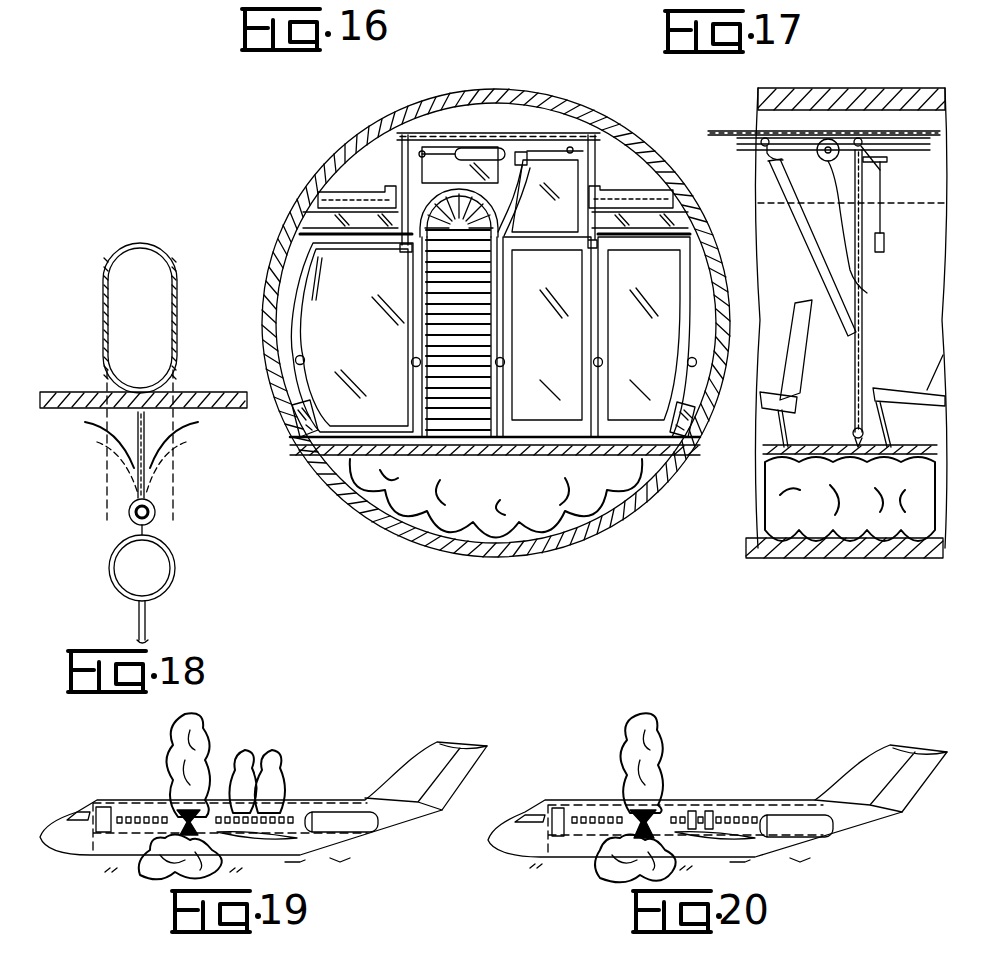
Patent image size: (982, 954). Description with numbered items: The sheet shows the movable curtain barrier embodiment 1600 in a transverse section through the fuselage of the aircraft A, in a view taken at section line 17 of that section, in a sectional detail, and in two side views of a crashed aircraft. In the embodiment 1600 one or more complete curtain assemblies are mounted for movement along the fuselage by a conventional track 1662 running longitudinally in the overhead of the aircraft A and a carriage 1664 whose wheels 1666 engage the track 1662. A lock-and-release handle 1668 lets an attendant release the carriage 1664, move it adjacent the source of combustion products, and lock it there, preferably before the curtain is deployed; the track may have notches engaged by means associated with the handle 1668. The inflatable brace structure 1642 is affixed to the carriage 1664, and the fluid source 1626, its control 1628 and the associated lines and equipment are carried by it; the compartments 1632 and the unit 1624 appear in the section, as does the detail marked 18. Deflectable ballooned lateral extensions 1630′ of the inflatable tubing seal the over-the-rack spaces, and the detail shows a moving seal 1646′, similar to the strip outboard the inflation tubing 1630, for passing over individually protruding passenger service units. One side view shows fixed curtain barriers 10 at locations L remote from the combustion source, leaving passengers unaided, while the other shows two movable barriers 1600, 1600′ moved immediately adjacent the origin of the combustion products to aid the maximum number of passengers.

In FIG. 16, the embodiment 1600 is at (312, 170).
In FIG. 20, the embodiment 1600 is at (613, 820).
In FIG. 20, the movable curtain barrier 1600′ is at (653, 815).
In FIG. 16, the control unit 1624 is at (557, 150).
In FIG. 16, the fluid source 1626 is at (515, 145).
In FIG. 17, the fluid source 1626 is at (863, 290).
In FIG. 16, the control 1628 is at (527, 150).
In FIG. 17, the control 1628 is at (810, 163).
In FIG. 18, the inflation tubing 1630 is at (172, 556).
In FIG. 16, the deflectable ballooned lateral extensions 1630′ is at (345, 191).
In FIG. 18, the deflectable ballooned lateral extensions 1630′ is at (176, 292).
In FIG. 16, the overhead storage compartment 1632 is at (380, 350).
In FIG. 17, the inflatable brace structure 1642 is at (802, 255).
In FIG. 18, the moving seal 1646′ is at (152, 482).
In FIG. 16, the track 1662 is at (398, 140).
In FIG. 17, the track 1662 is at (720, 138).
In FIG. 16, the carriage 1664 is at (451, 135).
In FIG. 17, the carriage 1664 is at (788, 163).
In FIG. 18, the carriage 1664 is at (156, 510).
In FIG. 16, the wheels 1666 is at (407, 138).
In FIG. 17, the wheels 1666 is at (768, 140).
In FIG. 16, the lock-and-release handle 1668 is at (397, 214).
In FIG. 17, the lock-and-release handle 1668 is at (885, 250).
In FIG. 16, the section line 17— 17 is at (452, 40).
In FIG. 16, the section line 18 is at (397, 173).
In FIG. 16, the aircraft A is at (478, 90).
In FIG. 17, the aircraft A is at (890, 90).
In FIG. 19, the aircraft A is at (46, 828).
In FIG. 20, the aircraft A is at (500, 828).
In FIG. 19, the locations L is at (167, 810).
In FIG. 19, the curtain barriers 10 is at (273, 820).